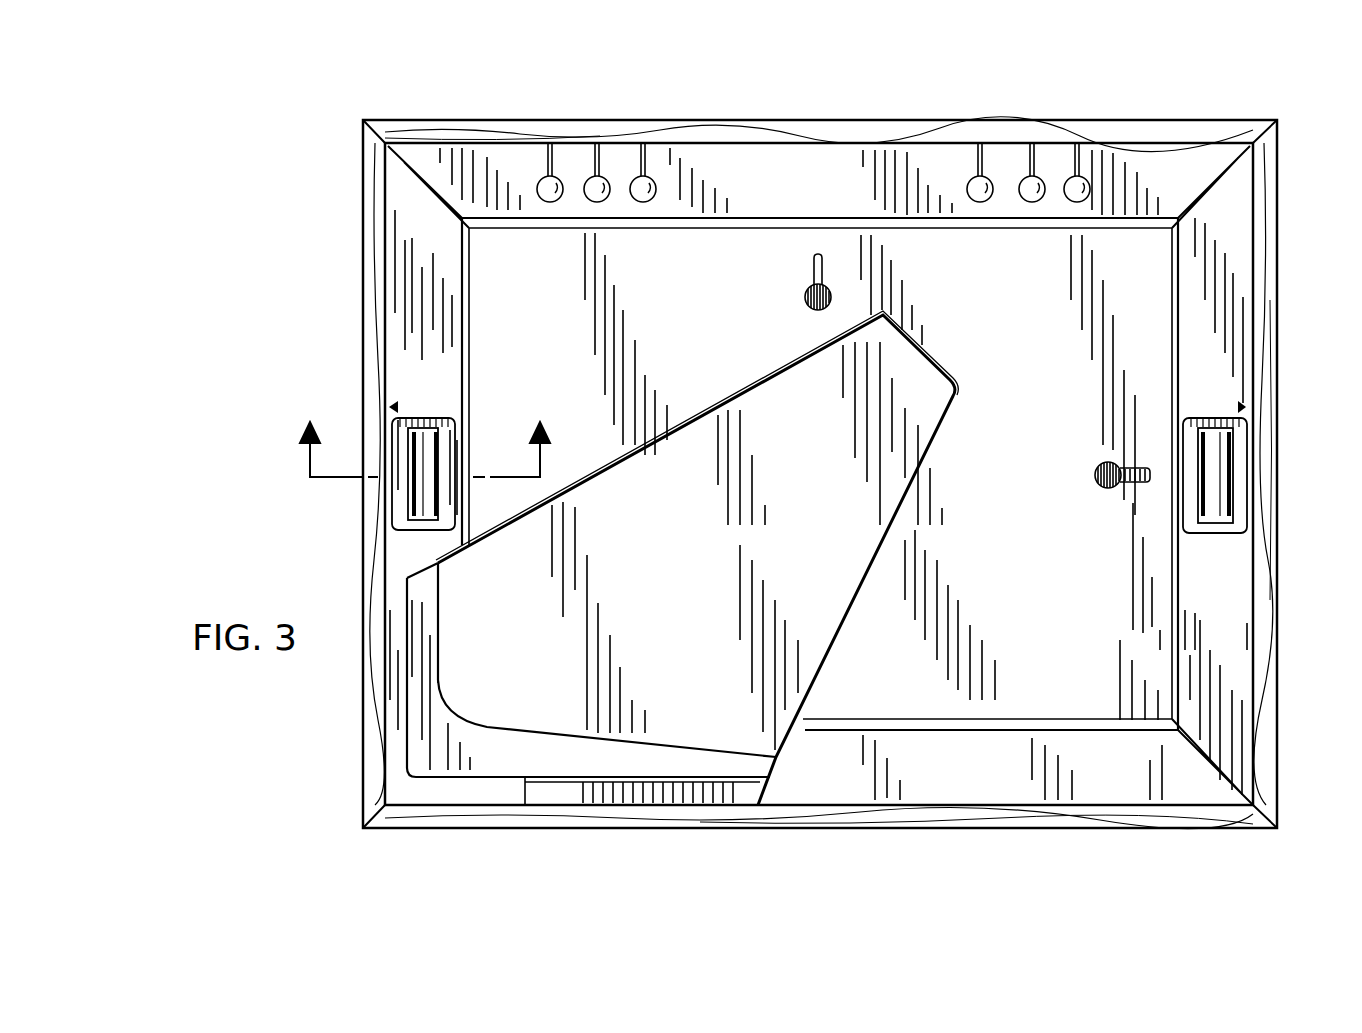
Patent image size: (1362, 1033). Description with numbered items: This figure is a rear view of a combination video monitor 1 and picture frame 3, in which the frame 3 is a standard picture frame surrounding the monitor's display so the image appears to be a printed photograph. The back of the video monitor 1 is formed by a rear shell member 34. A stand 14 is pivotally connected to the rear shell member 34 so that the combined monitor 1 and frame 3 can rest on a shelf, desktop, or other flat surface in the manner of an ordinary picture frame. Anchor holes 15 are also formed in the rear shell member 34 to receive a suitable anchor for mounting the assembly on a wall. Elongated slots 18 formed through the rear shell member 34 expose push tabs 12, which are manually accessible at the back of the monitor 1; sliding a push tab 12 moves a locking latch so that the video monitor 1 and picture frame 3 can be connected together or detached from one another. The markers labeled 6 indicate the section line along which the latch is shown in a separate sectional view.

The video monitor 1 is at (1272, 293).
The frame 3 is at (794, 110).
The section line 6- 6 is at (425, 437).
The push tab 12 is at (412, 503).
The stand 14 is at (495, 662).
The anchor holes 15 is at (805, 300).
The elongated slots 18 is at (427, 512).
The rear shell member 34 is at (1217, 625).